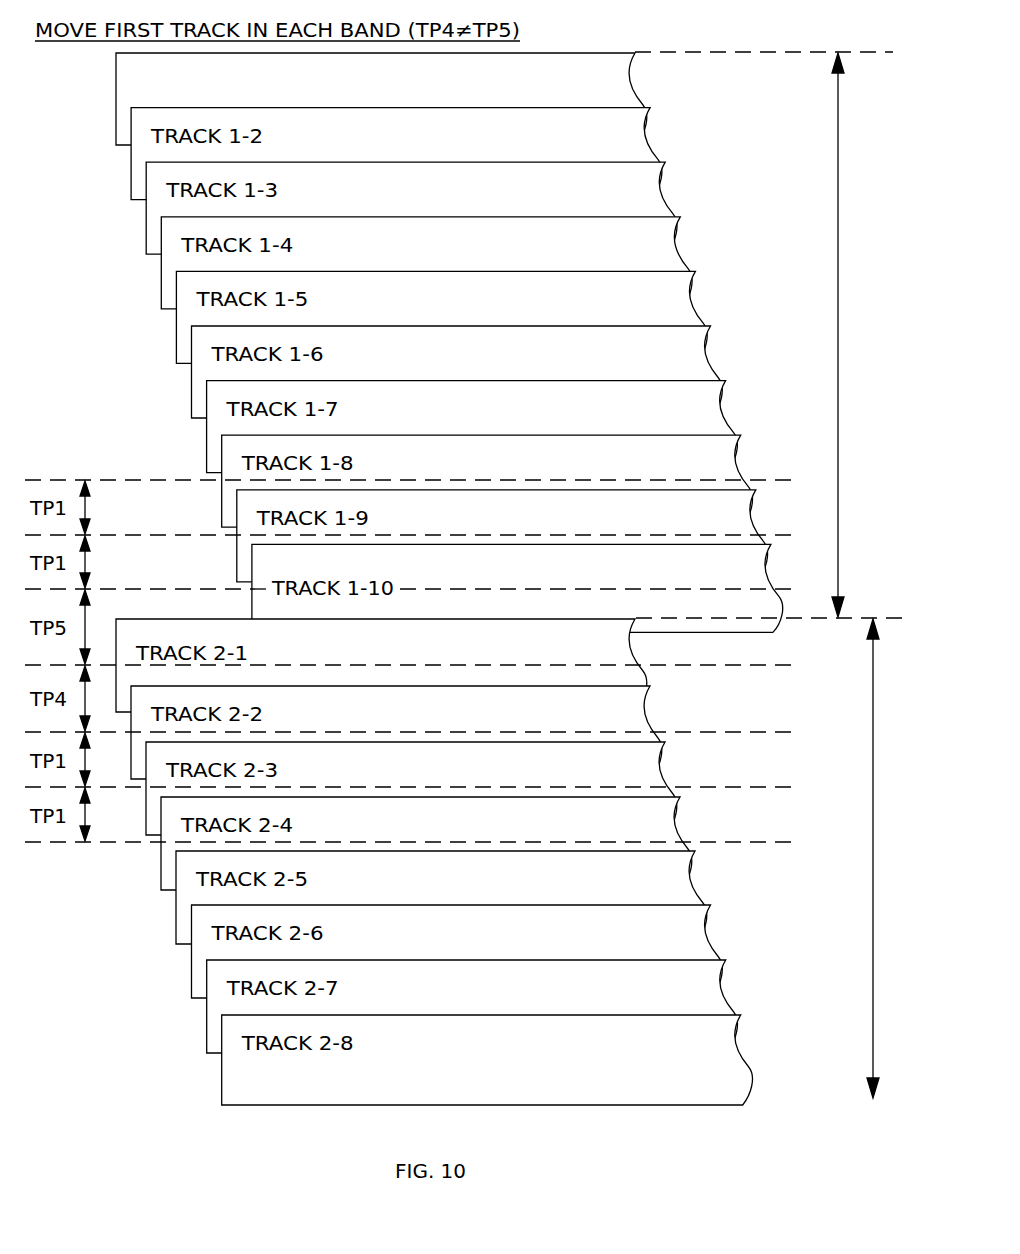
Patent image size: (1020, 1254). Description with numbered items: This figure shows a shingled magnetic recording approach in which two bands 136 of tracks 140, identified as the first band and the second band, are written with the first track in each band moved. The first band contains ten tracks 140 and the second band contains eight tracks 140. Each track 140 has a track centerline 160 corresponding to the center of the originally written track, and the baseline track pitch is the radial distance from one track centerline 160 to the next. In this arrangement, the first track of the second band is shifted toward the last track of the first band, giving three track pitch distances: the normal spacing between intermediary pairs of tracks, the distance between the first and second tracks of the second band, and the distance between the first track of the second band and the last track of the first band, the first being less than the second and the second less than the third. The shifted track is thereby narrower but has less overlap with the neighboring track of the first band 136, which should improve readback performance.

The band 136 is at (838, 190).
The track 140 is at (118, 99).
The track centerline 160 is at (113, 478).